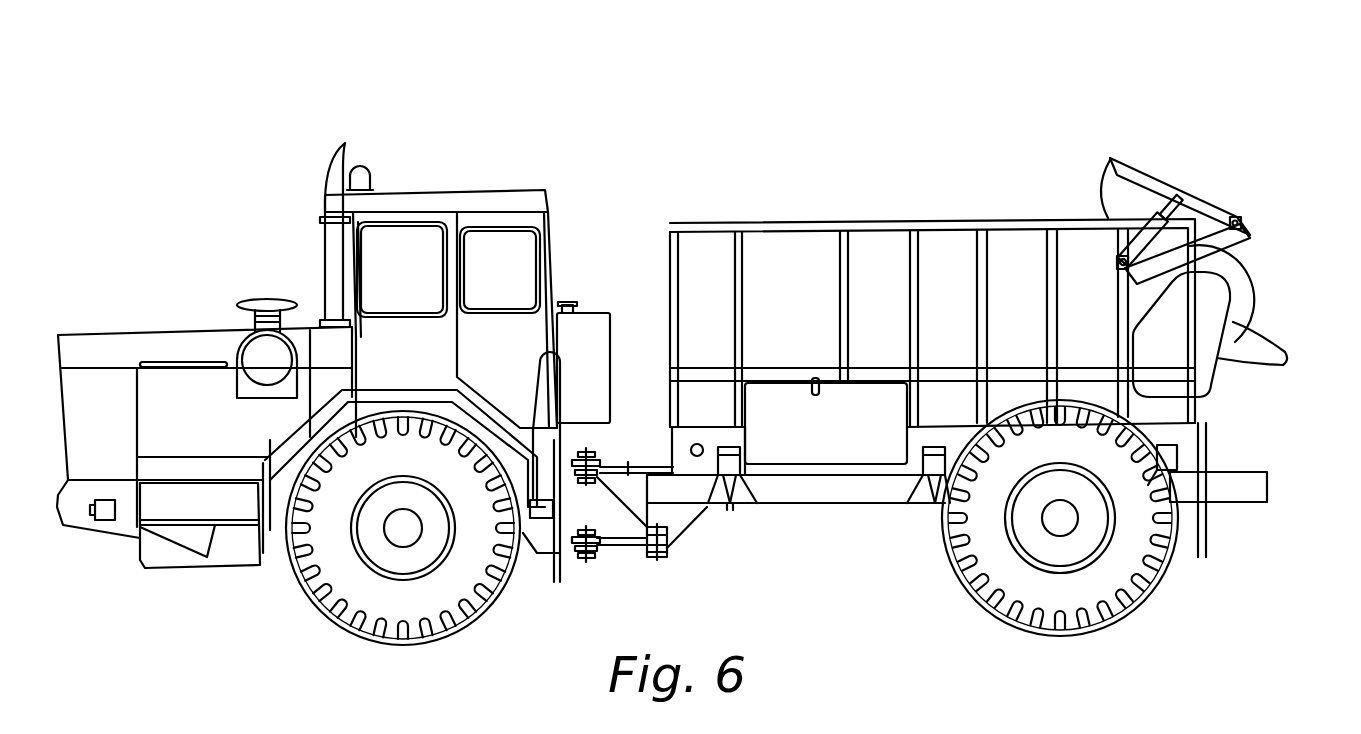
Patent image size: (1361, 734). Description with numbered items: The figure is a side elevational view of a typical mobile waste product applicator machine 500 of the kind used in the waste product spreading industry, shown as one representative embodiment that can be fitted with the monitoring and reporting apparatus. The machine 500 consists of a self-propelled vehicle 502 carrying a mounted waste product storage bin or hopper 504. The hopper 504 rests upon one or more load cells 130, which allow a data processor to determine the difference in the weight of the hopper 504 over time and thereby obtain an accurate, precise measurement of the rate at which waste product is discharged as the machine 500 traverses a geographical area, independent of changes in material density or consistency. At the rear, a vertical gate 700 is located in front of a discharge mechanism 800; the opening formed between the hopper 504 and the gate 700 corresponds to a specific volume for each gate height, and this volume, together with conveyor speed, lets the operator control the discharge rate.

The mobile waste product applicator machine 500 is at (699, 105).
The self-propelled vehicle 502 is at (548, 200).
The waste product storage bin or hopper 504 is at (870, 222).
The load cells 130 is at (920, 463).
The vertical gate 700 is at (1108, 162).
The discharge mechanism 800 is at (1247, 275).